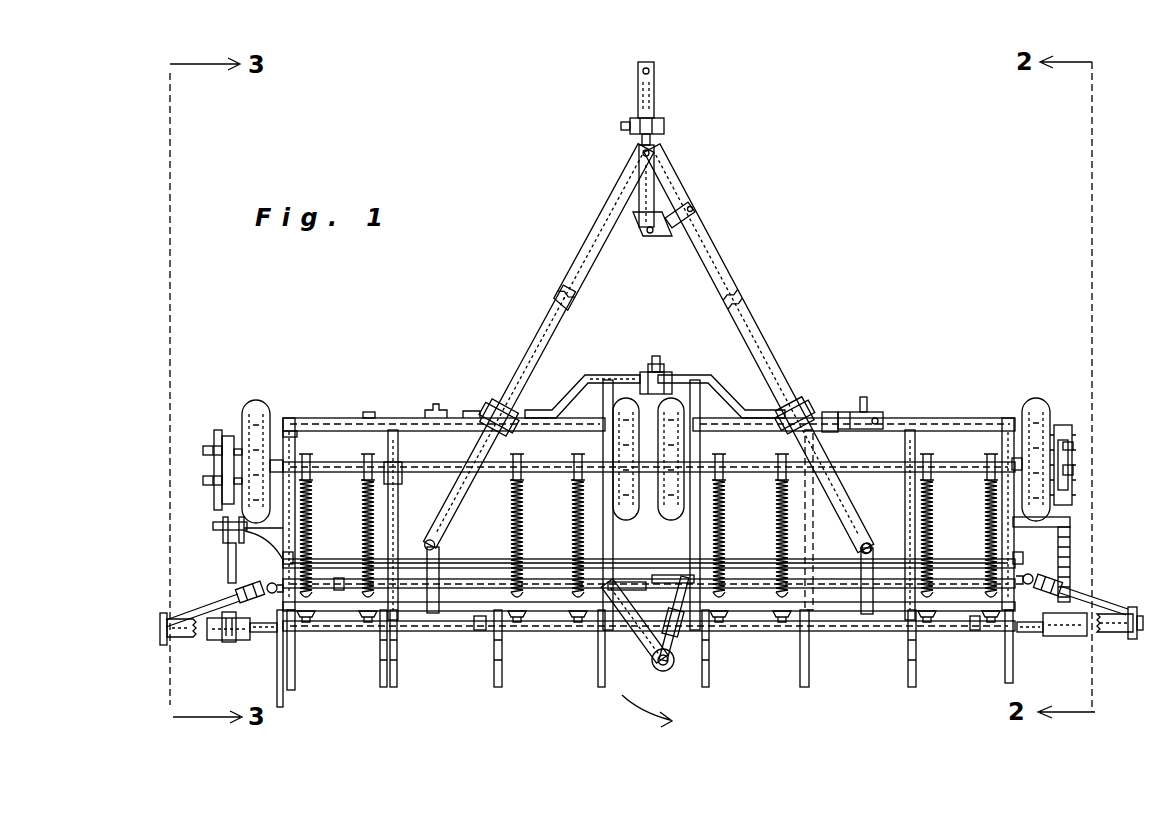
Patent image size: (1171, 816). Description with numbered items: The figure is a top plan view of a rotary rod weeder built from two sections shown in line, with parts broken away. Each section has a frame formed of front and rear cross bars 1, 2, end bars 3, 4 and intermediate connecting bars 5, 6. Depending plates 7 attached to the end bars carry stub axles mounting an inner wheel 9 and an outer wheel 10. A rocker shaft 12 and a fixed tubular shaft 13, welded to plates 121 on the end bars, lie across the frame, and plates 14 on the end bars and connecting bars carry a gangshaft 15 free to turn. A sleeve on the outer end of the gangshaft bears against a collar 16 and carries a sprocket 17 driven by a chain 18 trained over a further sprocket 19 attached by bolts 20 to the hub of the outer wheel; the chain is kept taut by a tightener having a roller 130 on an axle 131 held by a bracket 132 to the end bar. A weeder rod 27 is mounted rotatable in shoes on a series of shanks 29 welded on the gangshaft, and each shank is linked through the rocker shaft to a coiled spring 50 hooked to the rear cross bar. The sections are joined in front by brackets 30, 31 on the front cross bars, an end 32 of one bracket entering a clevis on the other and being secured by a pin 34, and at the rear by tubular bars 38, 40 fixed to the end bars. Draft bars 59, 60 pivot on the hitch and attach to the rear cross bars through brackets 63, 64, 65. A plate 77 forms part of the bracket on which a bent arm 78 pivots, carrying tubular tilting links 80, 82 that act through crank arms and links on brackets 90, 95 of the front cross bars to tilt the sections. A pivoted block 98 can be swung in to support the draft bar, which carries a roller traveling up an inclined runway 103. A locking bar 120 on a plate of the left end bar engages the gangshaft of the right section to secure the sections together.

The front cross bar 1 is at (331, 418).
The rear cross bar 2 is at (975, 632).
The end bar 3 is at (296, 431).
The end bar 4 is at (993, 430).
The intermediate connecting bar 5 is at (412, 418).
The intermediate connecting bar 6 is at (903, 490).
The depending plate 7 is at (284, 418).
The inner wheel 9 is at (672, 516).
The outer wheel 10 is at (257, 402).
The rocker shaft 12 is at (368, 418).
The tubular shaft 13 is at (480, 632).
The plate 14 is at (276, 636).
The gangshaft 15 is at (513, 652).
The collar 16 is at (242, 642).
The sprocket 17 is at (228, 600).
The chain 18 is at (222, 530).
The sprocket 19 is at (223, 432).
The bolt 20 is at (220, 462).
The weeder rod 27 is at (338, 583).
The shank 29 is at (709, 678).
The bracket 30 is at (571, 404).
The bracket 31 is at (707, 378).
The end 32 is at (650, 395).
The pin 34 is at (654, 357).
The tubular bar 38 is at (643, 637).
The tubular bar 40 is at (622, 630).
The coiled spring 50 is at (573, 522).
The draft bar 59 is at (592, 253).
The draft bar 60 is at (697, 203).
The bracket 63 is at (404, 651).
The bracket 64 is at (860, 640).
The bracket 65 is at (740, 612).
The plate 77 is at (645, 185).
The bent arm 78 is at (670, 217).
The tubular tilting link 80 is at (732, 254).
The tubular tilting link 82 is at (558, 312).
The bracket 90 is at (818, 402).
The bracket 95 is at (483, 412).
The block 98 is at (838, 435).
The inclined runway 103 is at (863, 430).
The locking bar 120 is at (283, 636).
The plate 121 is at (290, 556).
The roller 130 is at (226, 522).
The axle 131 is at (238, 545).
The bracket 132 is at (243, 558).